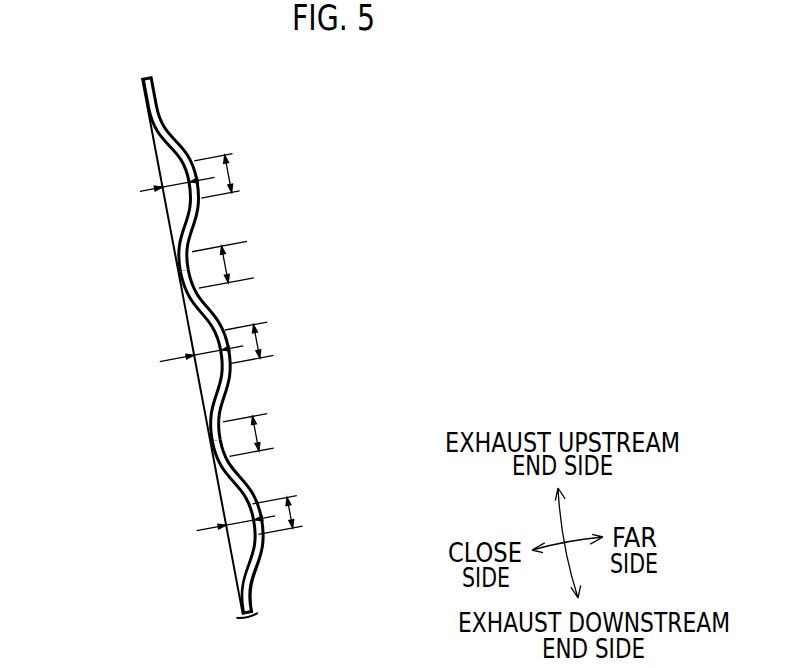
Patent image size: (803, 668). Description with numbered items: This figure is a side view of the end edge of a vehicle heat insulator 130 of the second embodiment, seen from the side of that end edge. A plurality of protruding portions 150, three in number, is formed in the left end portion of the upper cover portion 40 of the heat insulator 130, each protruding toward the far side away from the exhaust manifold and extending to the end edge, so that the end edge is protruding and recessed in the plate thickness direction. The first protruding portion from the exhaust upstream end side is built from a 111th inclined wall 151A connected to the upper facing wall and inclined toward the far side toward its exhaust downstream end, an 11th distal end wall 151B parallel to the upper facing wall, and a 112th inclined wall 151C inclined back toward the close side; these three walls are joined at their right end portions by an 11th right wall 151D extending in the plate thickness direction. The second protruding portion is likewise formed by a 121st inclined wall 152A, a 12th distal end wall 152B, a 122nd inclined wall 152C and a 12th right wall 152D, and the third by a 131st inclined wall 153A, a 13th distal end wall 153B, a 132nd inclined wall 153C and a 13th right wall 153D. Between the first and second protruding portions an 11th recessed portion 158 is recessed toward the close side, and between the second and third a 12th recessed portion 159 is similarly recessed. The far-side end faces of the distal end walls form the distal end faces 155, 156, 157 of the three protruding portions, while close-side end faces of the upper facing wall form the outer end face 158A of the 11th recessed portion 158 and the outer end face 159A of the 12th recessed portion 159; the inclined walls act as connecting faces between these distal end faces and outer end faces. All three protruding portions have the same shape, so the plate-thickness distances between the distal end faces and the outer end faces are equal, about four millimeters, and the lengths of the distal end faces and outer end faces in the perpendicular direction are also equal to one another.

The upper cover portion 40 is at (312, 346).
The heat insulator 130 is at (386, 141).
The protruding portions 150 is at (268, 342).
The distal end face 155 is at (195, 175).
The distal end face 156 is at (236, 364).
The distal end face 157 is at (263, 525).
The 11th recessed portion 158 is at (193, 216).
The 12th recessed portion 159 is at (227, 392).
The outer end face 158A is at (177, 272).
The outer end face 159A is at (207, 444).
The 111th inclined wall 151A is at (150, 138).
The 11th distal end wall 151B is at (185, 175).
The 112th inclined wall 151C is at (180, 225).
The 11th right wall 151D is at (173, 201).
The 121st inclined wall 152A is at (183, 303).
The 12th distal end wall 152B is at (218, 346).
The 122nd inclined wall 152C is at (212, 396).
The 12th right wall 152D is at (208, 368).
The 131st inclined wall 153A is at (217, 471).
The 13th distal end wall 153B is at (249, 515).
The 132nd inclined wall 153C is at (246, 561).
The 13th right wall 153D is at (241, 537).